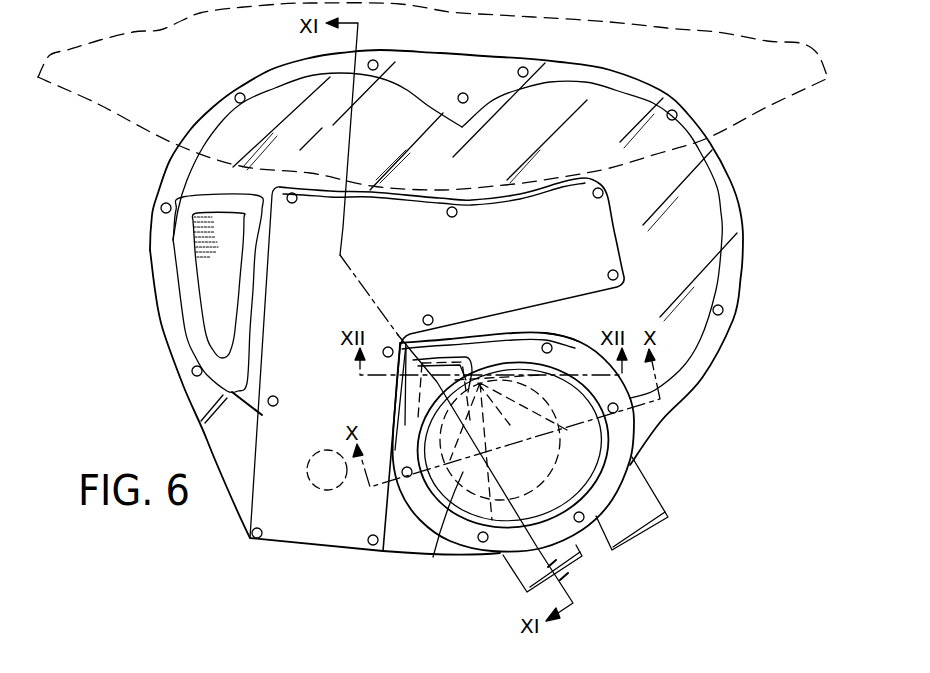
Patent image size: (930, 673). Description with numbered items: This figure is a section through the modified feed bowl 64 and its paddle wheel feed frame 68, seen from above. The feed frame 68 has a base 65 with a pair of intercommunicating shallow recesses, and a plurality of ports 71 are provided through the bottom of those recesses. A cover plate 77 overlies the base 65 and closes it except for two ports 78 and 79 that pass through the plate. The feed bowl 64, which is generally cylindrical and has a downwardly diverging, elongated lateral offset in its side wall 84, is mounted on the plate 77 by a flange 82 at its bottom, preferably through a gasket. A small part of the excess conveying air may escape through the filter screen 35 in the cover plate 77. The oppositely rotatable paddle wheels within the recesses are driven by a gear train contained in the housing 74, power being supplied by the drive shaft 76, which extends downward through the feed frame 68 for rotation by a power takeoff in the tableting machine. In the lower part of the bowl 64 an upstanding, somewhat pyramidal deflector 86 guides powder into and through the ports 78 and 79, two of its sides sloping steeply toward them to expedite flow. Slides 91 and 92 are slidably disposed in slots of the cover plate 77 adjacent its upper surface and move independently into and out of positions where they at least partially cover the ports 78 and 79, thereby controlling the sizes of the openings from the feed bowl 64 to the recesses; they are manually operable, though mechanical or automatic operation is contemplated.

The filter screen 35 is at (203, 283).
The feed bowl 64 is at (613, 456).
The base 65 is at (398, 672).
The feed frame 68 is at (735, 199).
The ports 71 is at (210, 663).
The housing 74 is at (619, 231).
The drive shaft 76 is at (325, 495).
The plate 77 is at (423, 78).
The port 78 is at (443, 388).
The port 79 is at (550, 370).
The flange 82 is at (628, 420).
The side wall 84 is at (440, 365).
The deflector 86 is at (442, 527).
The slide 91 is at (560, 548).
The slide 92 is at (640, 515).